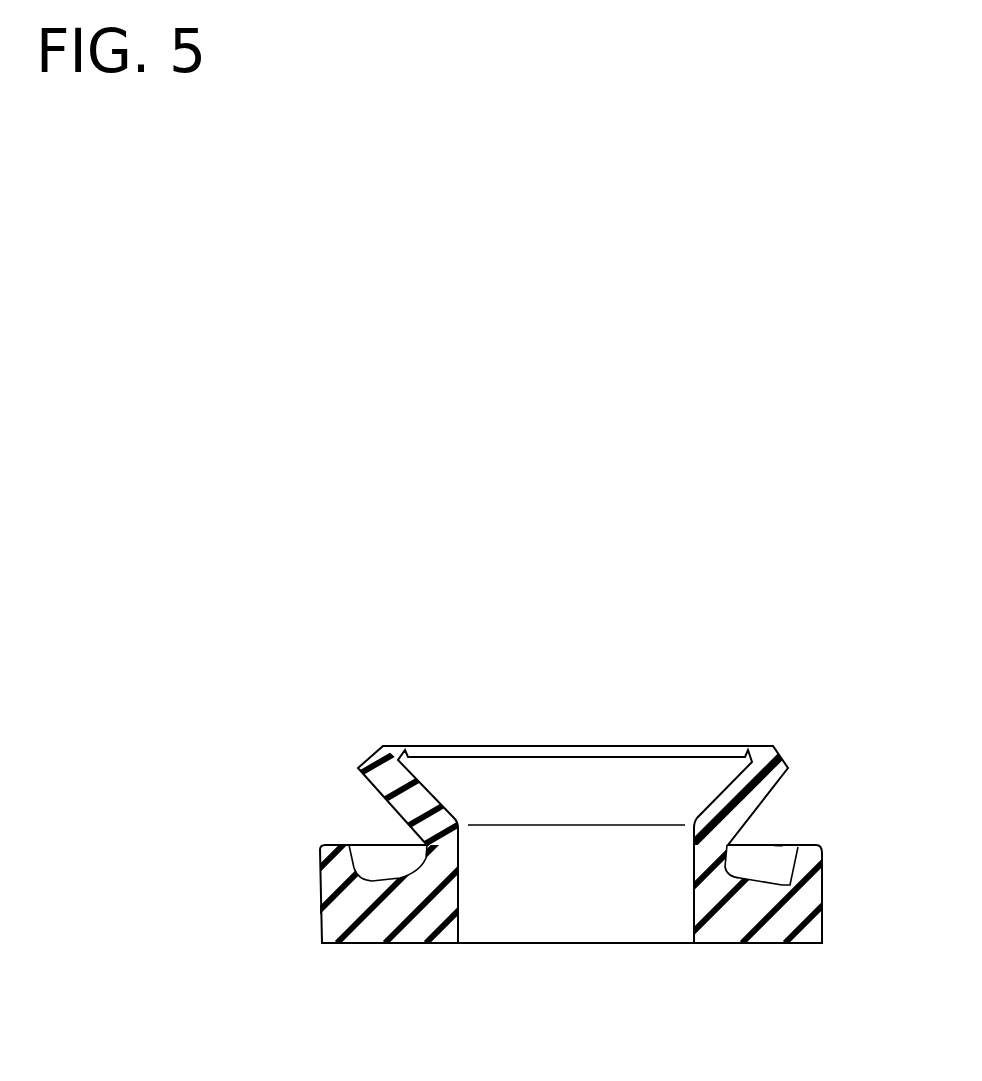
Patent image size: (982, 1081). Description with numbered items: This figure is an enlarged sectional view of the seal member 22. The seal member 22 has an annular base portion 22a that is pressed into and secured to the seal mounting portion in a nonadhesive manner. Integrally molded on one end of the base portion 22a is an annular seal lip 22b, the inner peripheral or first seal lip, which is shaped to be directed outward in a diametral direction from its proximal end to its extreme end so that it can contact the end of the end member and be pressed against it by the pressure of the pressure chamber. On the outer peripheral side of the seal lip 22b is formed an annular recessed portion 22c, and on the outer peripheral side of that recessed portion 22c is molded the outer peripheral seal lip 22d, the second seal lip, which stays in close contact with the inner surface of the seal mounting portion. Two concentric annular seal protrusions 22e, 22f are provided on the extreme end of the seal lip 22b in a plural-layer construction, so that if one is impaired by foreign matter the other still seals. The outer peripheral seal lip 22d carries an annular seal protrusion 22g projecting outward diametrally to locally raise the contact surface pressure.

The seal member 22 is at (597, 726).
The annular base portion 22a is at (763, 932).
The annular seal lip 22b is at (772, 745).
The annular recessed portion 22c is at (755, 863).
The outer peripheral seal lip 22d is at (817, 872).
The seal protrusion 22e is at (381, 746).
The seal protrusion 22f is at (406, 748).
The annular seal protrusion 22g is at (322, 866).